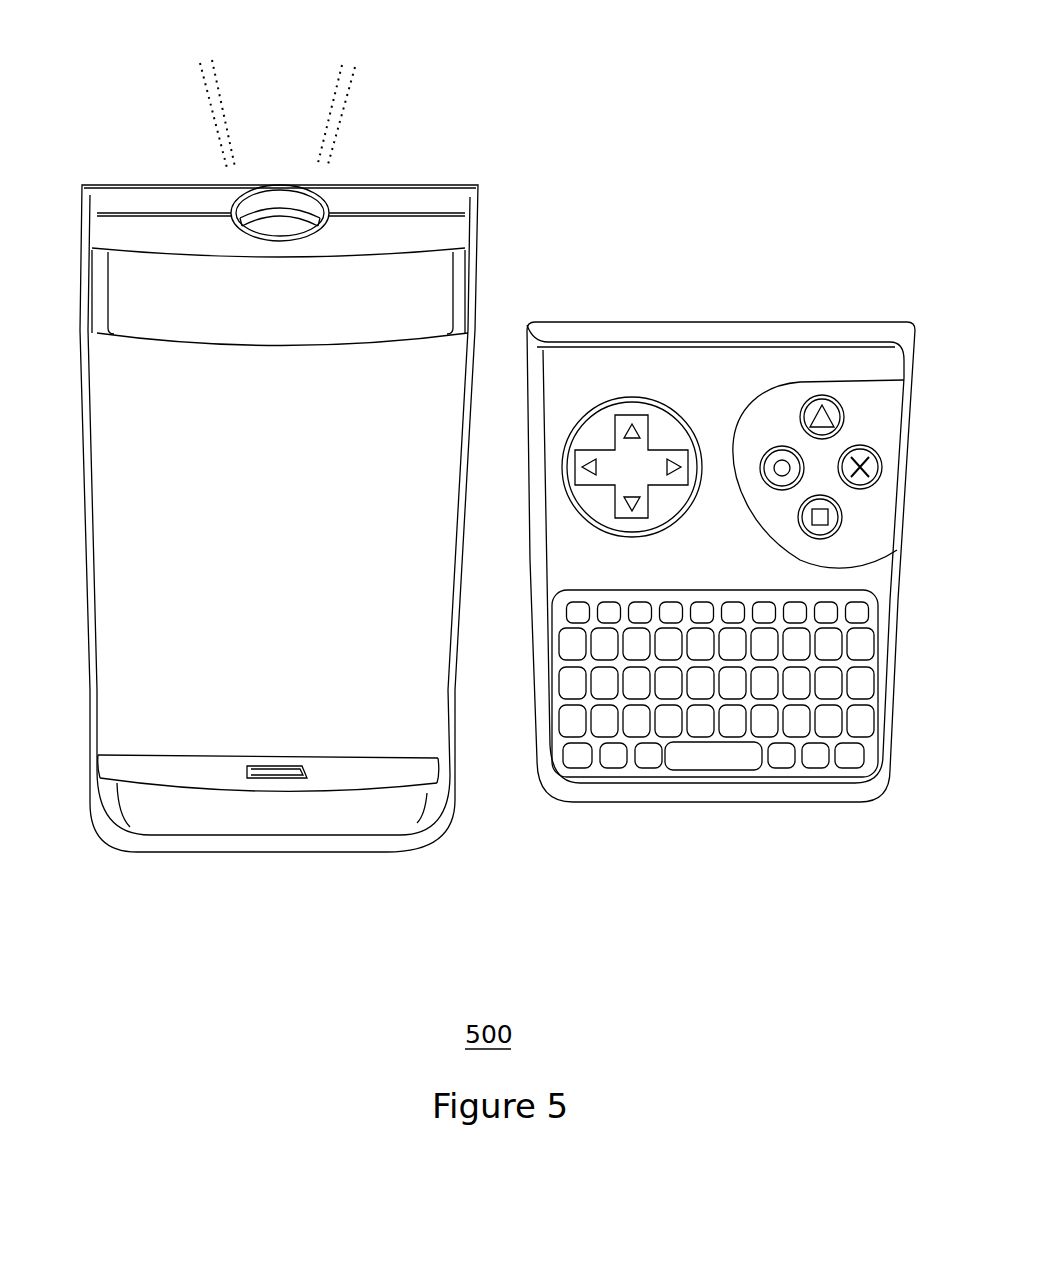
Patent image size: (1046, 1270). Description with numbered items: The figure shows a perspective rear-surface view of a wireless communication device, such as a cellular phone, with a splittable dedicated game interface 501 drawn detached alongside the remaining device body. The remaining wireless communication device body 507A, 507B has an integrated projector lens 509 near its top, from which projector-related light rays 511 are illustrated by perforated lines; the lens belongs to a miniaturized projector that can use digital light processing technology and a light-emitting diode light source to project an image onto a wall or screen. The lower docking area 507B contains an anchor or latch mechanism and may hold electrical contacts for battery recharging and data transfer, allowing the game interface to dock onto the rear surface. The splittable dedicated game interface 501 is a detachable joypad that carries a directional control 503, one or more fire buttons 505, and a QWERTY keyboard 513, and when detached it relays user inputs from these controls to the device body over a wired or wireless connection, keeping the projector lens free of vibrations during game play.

The splittable dedicated game interface 501 is at (738, 380).
The directional control 503 is at (635, 413).
The fire buttons 505 is at (830, 392).
The remaining wireless communication device body 507A is at (372, 298).
The docking area 507B is at (233, 658).
The integrated projector lens 509 is at (280, 220).
The projector-related light rays 511 is at (362, 103).
The QWERTY keyboard 513 is at (728, 770).